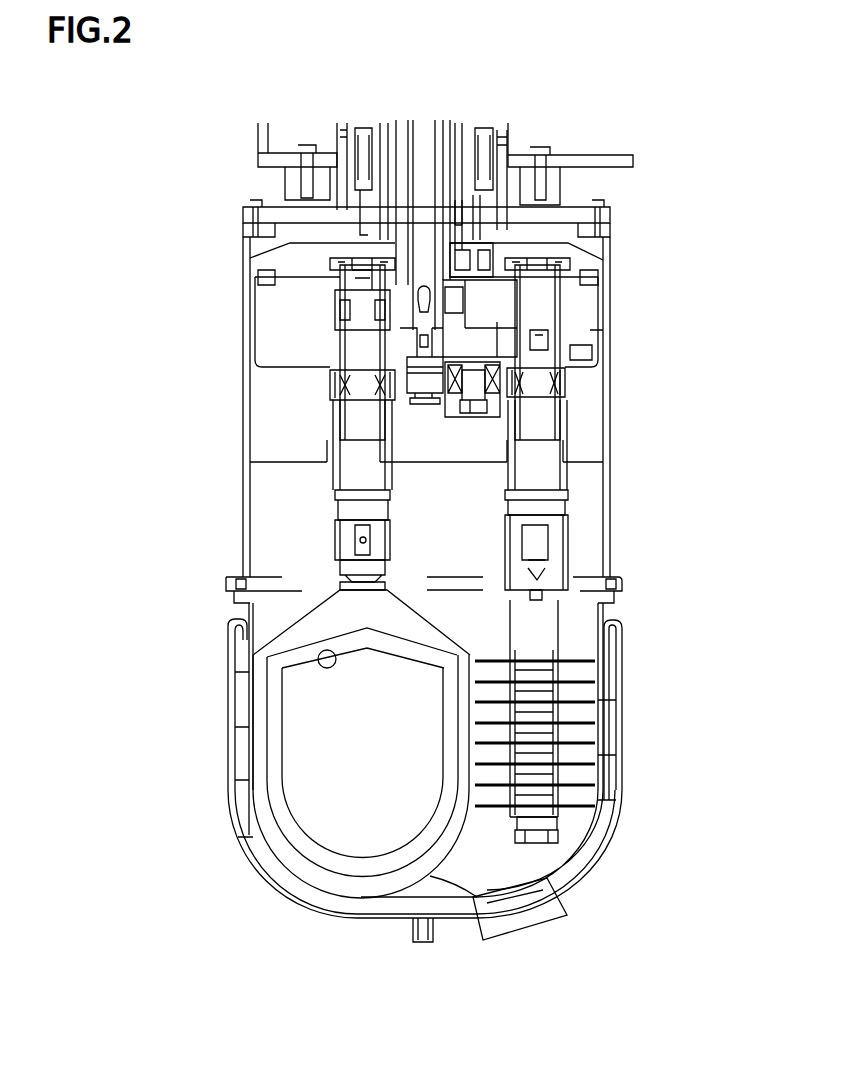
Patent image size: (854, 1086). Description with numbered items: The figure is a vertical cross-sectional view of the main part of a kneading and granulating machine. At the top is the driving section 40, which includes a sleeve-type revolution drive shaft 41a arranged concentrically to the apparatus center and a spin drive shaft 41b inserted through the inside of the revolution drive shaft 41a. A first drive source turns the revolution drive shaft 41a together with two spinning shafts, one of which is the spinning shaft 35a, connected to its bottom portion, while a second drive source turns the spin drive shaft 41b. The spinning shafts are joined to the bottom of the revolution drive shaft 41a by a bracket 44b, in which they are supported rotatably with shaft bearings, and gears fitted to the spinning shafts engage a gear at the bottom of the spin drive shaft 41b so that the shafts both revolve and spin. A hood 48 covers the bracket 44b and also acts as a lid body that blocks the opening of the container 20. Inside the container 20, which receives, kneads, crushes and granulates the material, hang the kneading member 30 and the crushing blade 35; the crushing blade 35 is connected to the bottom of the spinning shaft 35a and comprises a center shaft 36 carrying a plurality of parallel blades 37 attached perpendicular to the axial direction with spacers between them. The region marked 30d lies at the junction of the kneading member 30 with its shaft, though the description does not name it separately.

The container 20 is at (622, 720).
The kneading member 30 is at (305, 626).
The casing neck 30d is at (345, 582).
The crushing blade 35 is at (612, 646).
The spinning shaft 35a is at (562, 546).
The center shaft 36 is at (562, 693).
The parallel blades 37 is at (572, 768).
The driving section 40 is at (228, 162).
The revolution drive shaft 41a is at (470, 142).
The spin drive shaft 41b is at (425, 138).
The bracket 44b is at (335, 542).
The hood 48 is at (612, 466).